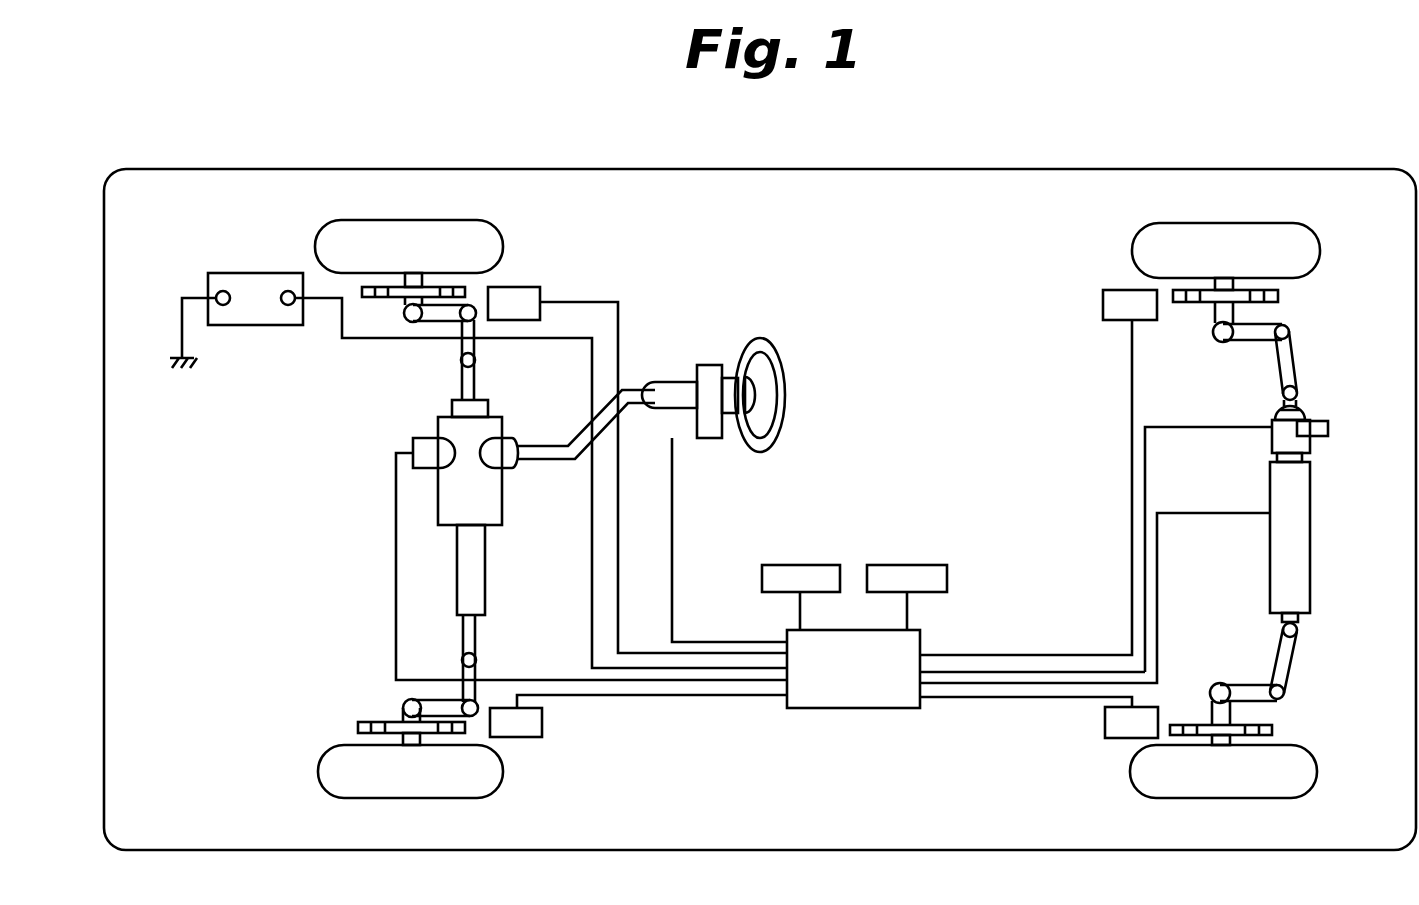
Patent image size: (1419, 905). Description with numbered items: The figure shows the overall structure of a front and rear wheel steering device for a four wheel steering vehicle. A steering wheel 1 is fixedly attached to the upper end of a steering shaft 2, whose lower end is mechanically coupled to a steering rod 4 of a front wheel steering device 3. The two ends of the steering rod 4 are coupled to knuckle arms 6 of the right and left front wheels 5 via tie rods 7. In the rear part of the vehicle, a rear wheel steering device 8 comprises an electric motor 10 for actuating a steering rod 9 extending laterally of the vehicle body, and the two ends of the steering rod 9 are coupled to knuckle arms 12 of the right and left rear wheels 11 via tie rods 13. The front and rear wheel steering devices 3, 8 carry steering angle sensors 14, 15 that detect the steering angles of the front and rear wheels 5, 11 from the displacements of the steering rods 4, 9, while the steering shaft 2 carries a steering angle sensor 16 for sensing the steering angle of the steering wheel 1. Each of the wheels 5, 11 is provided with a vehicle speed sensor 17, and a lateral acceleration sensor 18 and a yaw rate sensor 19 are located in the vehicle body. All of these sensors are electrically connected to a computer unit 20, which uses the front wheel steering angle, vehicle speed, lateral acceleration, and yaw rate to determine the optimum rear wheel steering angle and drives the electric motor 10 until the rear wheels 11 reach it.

The steering wheel 1 is at (770, 346).
The steering shaft 2 is at (558, 465).
The front wheel steering device 3 is at (440, 418).
The steering rod 4 is at (486, 585).
The front wheels 5 is at (322, 232).
The knuckle arms 6 is at (437, 331).
The tie rods 7 is at (477, 345).
The rear wheel steering device 8 is at (1352, 486).
The steering rod 9 is at (1300, 410).
The electric motor 10 is at (1312, 553).
The rear wheels 11 is at (1315, 258).
The knuckle arms 12 is at (1245, 345).
The tie rods 13 is at (1295, 365).
The steering angle sensor 14 is at (413, 448).
The steering angle sensor 15 is at (1330, 428).
The steering angle sensor 16 is at (660, 382).
The vehicle speed sensor 17 is at (522, 287).
The lateral acceleration sensor 18 is at (822, 565).
The yaw rate sensor 19 is at (930, 565).
The computer unit 20 is at (890, 708).